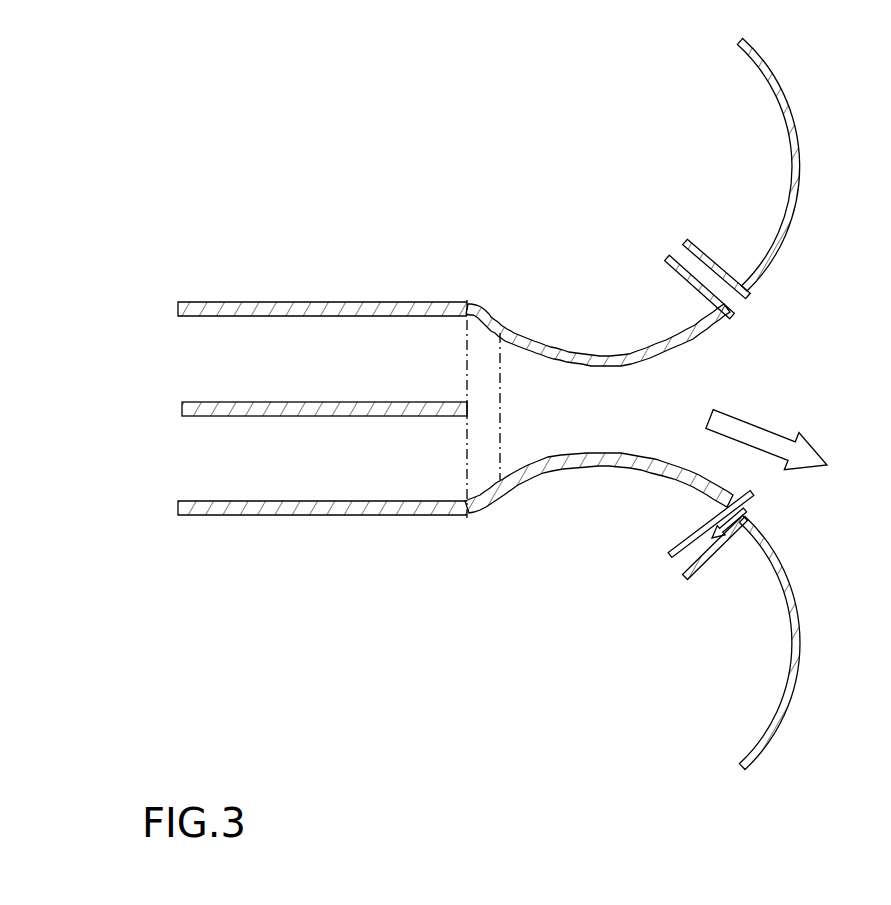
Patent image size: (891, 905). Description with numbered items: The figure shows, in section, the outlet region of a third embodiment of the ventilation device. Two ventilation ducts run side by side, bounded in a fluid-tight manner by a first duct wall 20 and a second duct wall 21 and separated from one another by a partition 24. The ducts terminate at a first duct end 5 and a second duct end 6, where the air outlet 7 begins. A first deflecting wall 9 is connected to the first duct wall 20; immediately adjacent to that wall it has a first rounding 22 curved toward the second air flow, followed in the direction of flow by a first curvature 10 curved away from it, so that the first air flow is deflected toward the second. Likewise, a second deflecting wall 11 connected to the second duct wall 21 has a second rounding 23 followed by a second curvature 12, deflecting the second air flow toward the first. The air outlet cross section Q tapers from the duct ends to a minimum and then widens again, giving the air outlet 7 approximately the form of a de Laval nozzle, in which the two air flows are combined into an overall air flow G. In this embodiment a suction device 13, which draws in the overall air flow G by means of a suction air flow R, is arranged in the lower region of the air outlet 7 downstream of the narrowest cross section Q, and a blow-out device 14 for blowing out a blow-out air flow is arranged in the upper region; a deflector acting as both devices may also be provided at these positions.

The first duct end 5 is at (455, 339).
The second duct end 6 is at (456, 478).
The air outlet 7 is at (698, 403).
The first deflecting wall 9 is at (598, 275).
The first curvature 10 is at (598, 275).
The second deflecting wall 11 is at (599, 528).
The second curvature 12 is at (599, 528).
The suction device 13 is at (735, 555).
The blow-out device 14 is at (734, 263).
The first duct wall 20 is at (240, 310).
The second duct wall 21 is at (230, 510).
The first rounding 22 is at (485, 283).
The second rounding 23 is at (487, 529).
The partition 24 is at (348, 408).
The overall air flow G is at (765, 403).
The suction air flow R is at (768, 506).
The air outlet cross section Q is at (500, 425).